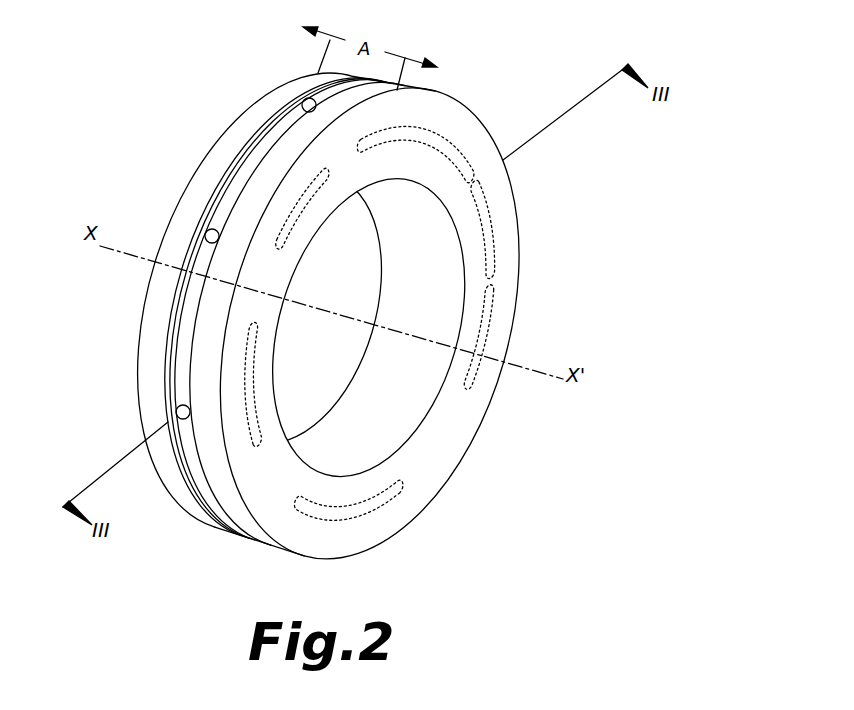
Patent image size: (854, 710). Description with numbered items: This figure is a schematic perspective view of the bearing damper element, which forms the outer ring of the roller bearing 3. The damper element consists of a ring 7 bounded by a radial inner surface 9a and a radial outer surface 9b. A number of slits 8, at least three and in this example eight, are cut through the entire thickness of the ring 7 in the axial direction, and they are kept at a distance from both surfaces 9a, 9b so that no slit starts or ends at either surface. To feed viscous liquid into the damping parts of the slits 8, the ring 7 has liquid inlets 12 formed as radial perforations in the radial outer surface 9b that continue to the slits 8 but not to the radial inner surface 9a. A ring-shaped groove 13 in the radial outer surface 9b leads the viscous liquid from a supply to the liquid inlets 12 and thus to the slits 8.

The roller bearing 3 is at (547, 68).
The ring 7 is at (208, 183).
The slits 8 is at (450, 137).
The radial inner surface 9a is at (393, 375).
The radial outer surface 9b is at (258, 118).
The liquid inlet 12 is at (303, 101).
The ring-shaped groove 13 is at (180, 382).